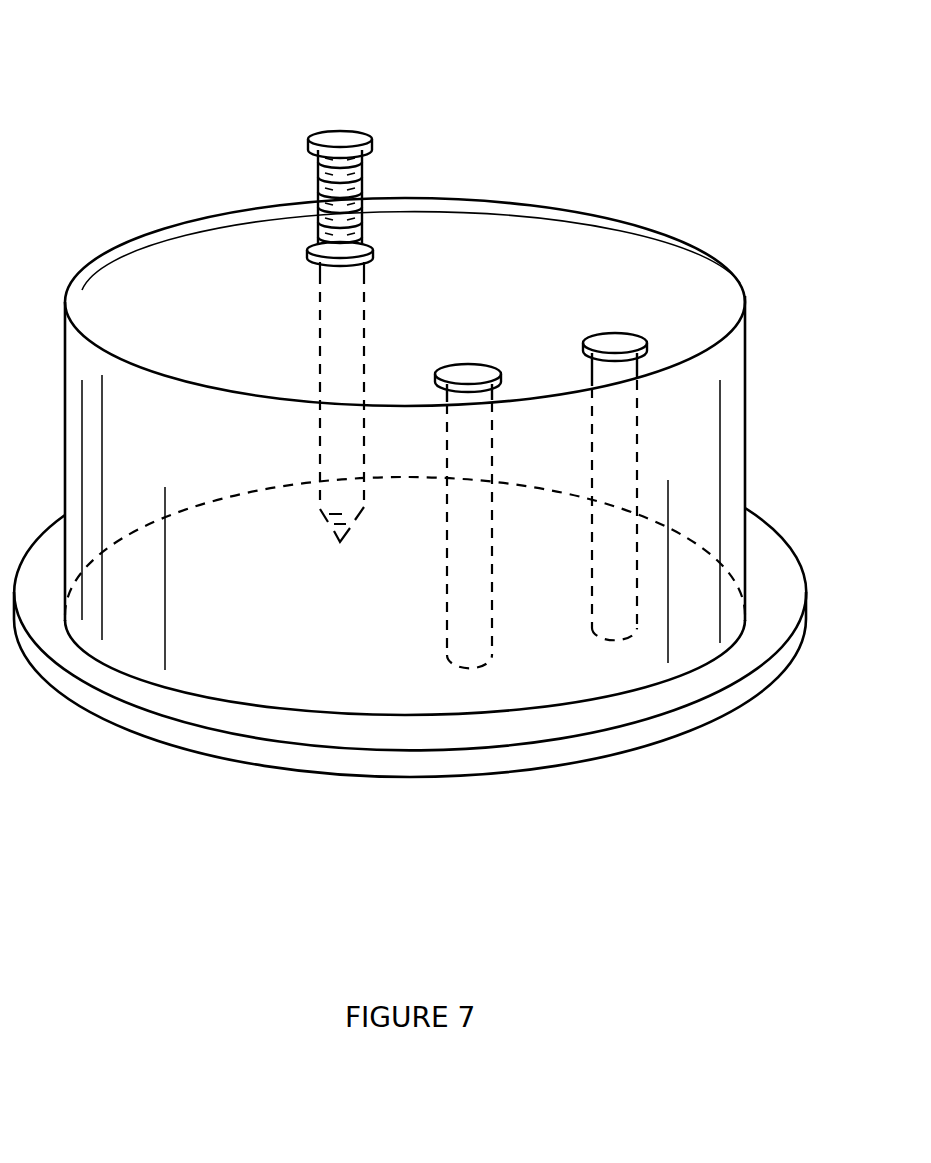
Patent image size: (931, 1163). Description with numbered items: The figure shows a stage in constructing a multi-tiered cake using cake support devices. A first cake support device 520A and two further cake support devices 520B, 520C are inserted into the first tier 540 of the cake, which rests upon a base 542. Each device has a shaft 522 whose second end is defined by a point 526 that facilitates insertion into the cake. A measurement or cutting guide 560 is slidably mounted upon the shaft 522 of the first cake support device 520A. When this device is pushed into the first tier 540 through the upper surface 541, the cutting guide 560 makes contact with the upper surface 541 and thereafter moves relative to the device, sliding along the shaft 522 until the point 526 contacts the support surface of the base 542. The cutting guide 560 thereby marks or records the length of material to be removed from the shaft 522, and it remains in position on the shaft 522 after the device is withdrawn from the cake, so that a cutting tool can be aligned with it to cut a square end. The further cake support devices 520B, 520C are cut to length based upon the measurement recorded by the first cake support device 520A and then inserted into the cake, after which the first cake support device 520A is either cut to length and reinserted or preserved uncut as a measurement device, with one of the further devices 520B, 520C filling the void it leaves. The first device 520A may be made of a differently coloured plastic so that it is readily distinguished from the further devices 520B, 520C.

The first cake support device 520A is at (346, 304).
The further cake support device 520B is at (611, 343).
The further cake support device 520C is at (452, 375).
The shaft 522 is at (443, 345).
The point 526 is at (326, 518).
The first tier of the cake 540 is at (490, 237).
The upper surface 541 is at (169, 272).
The base 542 is at (768, 540).
The cutting guide 560 is at (373, 243).